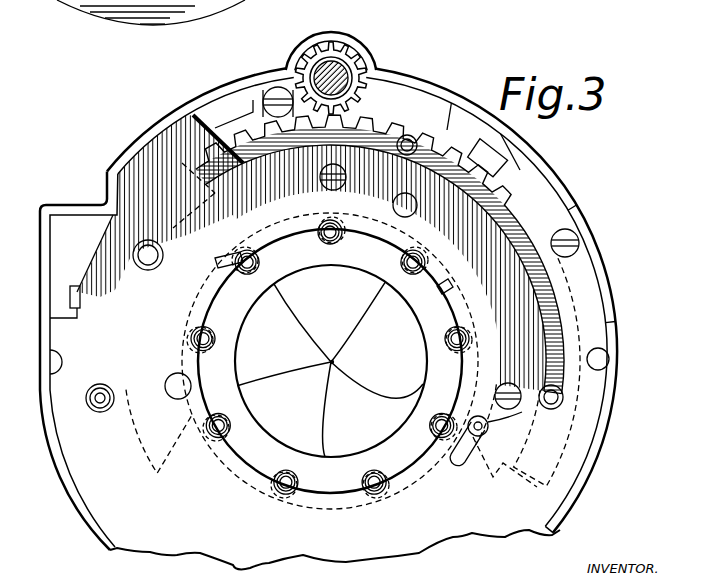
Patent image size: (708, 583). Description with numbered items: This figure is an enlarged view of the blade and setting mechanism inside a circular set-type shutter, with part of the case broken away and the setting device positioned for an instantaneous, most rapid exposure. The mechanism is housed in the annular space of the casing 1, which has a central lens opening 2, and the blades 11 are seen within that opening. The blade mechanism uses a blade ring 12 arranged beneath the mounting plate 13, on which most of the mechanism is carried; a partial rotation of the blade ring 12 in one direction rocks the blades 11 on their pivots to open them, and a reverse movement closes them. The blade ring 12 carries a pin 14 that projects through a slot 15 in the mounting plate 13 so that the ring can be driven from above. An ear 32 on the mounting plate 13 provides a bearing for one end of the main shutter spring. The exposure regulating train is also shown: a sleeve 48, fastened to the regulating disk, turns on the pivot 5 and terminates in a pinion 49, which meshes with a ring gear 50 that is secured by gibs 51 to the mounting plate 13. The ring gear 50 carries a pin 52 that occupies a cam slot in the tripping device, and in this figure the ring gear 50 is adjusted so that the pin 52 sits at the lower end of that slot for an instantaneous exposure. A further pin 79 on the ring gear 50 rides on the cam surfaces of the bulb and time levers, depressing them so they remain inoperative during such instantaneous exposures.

The casing 1 is at (597, 471).
The lens opening 2 is at (266, 429).
The pivot 5 is at (330, 70).
The blades 11 is at (330, 369).
The blade ring 12 is at (459, 463).
The mounting plate 13 is at (214, 261).
The pin 14 is at (521, 416).
The slot 15 is at (495, 460).
The ear 32 is at (449, 294).
The sleeve 48 is at (350, 76).
The pinion 49 is at (343, 59).
The ring gear 50 is at (374, 123).
The gibs 51 is at (423, 167).
The pin 52 is at (562, 396).
The pin 79 is at (409, 146).